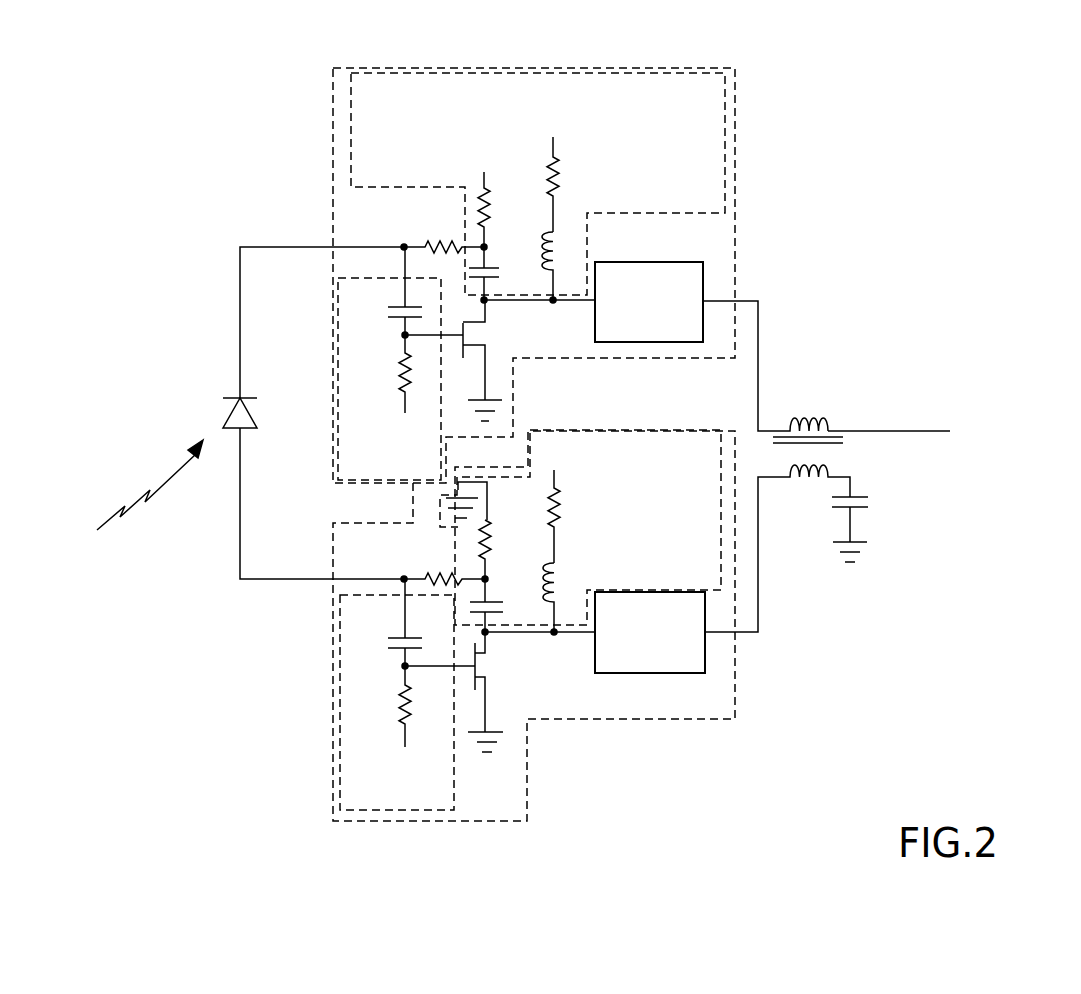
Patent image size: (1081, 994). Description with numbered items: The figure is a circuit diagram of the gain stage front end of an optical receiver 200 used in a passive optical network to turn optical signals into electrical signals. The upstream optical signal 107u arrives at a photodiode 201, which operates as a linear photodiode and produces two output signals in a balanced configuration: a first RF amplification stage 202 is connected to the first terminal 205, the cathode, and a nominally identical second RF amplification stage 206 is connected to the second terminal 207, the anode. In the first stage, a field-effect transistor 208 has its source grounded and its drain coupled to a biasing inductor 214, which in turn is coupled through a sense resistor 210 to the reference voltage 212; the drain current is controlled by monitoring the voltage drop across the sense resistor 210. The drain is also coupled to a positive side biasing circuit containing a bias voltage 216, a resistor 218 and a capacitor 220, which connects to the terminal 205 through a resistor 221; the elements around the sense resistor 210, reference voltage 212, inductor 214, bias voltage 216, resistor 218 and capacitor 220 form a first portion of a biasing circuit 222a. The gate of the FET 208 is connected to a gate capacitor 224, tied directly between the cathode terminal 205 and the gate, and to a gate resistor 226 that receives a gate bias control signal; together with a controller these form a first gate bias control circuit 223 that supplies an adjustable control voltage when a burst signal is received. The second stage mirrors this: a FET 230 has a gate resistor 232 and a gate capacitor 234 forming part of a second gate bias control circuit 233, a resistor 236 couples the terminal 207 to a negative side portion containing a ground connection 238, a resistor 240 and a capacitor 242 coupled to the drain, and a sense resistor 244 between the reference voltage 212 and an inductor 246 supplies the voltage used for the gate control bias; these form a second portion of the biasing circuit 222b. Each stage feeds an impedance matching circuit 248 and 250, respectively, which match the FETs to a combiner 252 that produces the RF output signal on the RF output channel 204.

The optical receiver 200 is at (1024, 82).
The first RF amplification stage 202 is at (710, 65).
The RF output channel 204 is at (910, 430).
The first terminal 205 is at (238, 280).
The second RF amplification stage 206 is at (717, 720).
The second terminal 207 is at (242, 548).
The field-effect transistor 208 is at (527, 352).
The sense resistor 210 is at (603, 168).
The reference voltage 212 is at (575, 118).
The biasing inductor 214 is at (580, 243).
The bias voltage 216 is at (460, 137).
The resistor 218 is at (512, 197).
The capacitor 220 is at (488, 285).
The resistor 221 is at (425, 213).
The first portion of biasing circuit 222a is at (730, 130).
The second portion of biasing circuit 222b is at (723, 570).
The first gate bias control circuit 223 is at (333, 290).
The gate capacitor 224 is at (343, 335).
The gate resistor 226 is at (343, 395).
The FET 230 is at (532, 682).
The gate resistor 232 is at (358, 732).
The second gate bias control circuit 233 is at (454, 780).
The gate capacitor 234 is at (357, 668).
The resistor 236 is at (422, 567).
The ground connection 238 is at (463, 488).
The resistor 240 is at (527, 540).
The capacitor 242 is at (477, 618).
The sense resistor 244 is at (617, 500).
The inductor 246 is at (587, 575).
The impedance matching circuit 248 is at (703, 272).
The impedance matching circuit 250 is at (705, 663).
The combiner 252 is at (830, 368).
The photodiode 201 is at (243, 430).
The upstream optical signal 107u is at (130, 513).